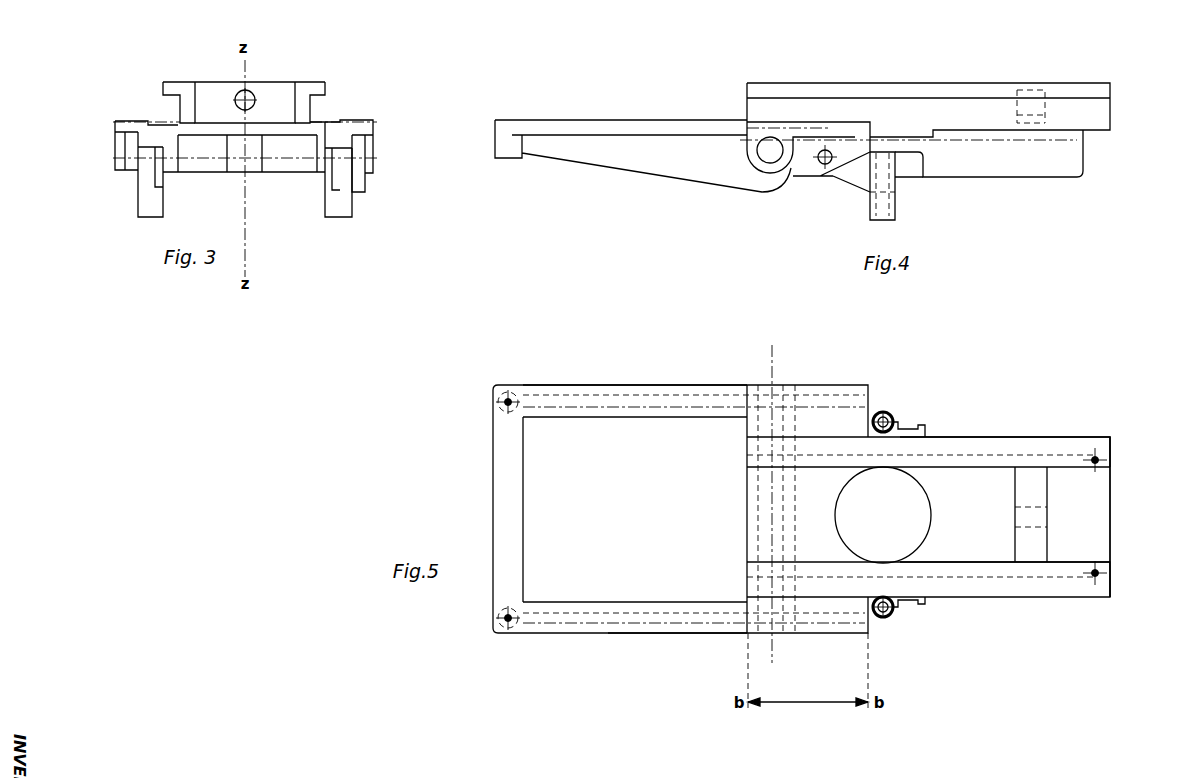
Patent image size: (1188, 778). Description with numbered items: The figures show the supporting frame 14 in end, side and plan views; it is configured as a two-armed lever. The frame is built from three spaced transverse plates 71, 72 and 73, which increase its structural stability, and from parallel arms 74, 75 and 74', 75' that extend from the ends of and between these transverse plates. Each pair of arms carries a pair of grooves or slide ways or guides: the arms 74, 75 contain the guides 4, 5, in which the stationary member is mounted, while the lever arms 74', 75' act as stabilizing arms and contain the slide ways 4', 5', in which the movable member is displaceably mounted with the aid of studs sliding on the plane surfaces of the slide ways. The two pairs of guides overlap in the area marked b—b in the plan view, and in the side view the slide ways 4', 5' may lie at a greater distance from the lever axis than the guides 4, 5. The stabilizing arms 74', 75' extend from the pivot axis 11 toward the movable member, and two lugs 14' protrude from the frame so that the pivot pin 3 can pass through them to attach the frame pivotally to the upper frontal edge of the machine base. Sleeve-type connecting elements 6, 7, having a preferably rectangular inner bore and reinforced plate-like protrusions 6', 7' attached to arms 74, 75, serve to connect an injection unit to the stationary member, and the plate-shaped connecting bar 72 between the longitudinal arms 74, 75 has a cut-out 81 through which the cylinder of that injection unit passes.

In FIG. 4, the pivot pin 3 is at (765, 160).
In FIG. 3, the groove or slide way or guide 4 is at (191, 88).
In FIG. 4, the groove or slide way or guide 4 is at (928, 87).
In FIG. 5, the groove or slide way or guide 4 is at (1005, 636).
In FIG. 4, the groove or slide way 4' is at (682, 175).
In FIG. 5, the groove or slide way 4' is at (644, 667).
In FIG. 3, the groove or slide way or guide 5 is at (307, 117).
In FIG. 5, the groove or slide way or guide 5 is at (928, 476).
In FIG. 5, the groove or slide way 5' is at (643, 346).
In FIG. 3, the sleeve-type connecting element 6 is at (110, 187).
In FIG. 4, the sleeve-type connecting element 6 is at (919, 232).
In FIG. 5, the sleeve-type connecting element 6 is at (904, 654).
In FIG. 3, the plate-like protrusion 6' is at (111, 179).
In FIG. 4, the plate-like protrusion 6' is at (952, 232).
In FIG. 5, the plate-like protrusion 6' is at (934, 654).
In FIG. 3, the sleeve-type connecting element 7 is at (388, 169).
In FIG. 5, the sleeve-type connecting element 7 is at (904, 393).
In FIG. 3, the plate-like protrusion 7' is at (335, 230).
In FIG. 5, the plate-like protrusion 7' is at (934, 396).
In FIG. 5, the pivot axis 11 is at (770, 383).
In FIG. 5, the supporting frame 14 is at (792, 485).
In FIG. 4, the lug 14' is at (827, 181).
In FIG. 5, the transverse plate 71 is at (505, 455).
In FIG. 5, the transverse plate (plate-shaped connecting bar) 72 is at (975, 545).
In FIG. 5, the transverse plate 73 is at (1097, 530).
In FIG. 3, the arm 74 is at (121, 129).
In FIG. 4, the arm 74 is at (915, 216).
In FIG. 5, the arm 74 is at (1101, 636).
In FIG. 3, the lever arm (stabilizing arm) 74' is at (88, 154).
In FIG. 5, the lever arm (stabilizing arm) 74' is at (673, 503).
In FIG. 3, the arm 75 is at (381, 133).
In FIG. 5, the arm 75 is at (1005, 411).
In FIG. 3, the lever arm (stabilizing arm) 75' is at (408, 158).
In FIG. 5, the lever arm (stabilizing arm) 75' is at (573, 341).
In FIG. 5, the cut-out 81 is at (913, 535).